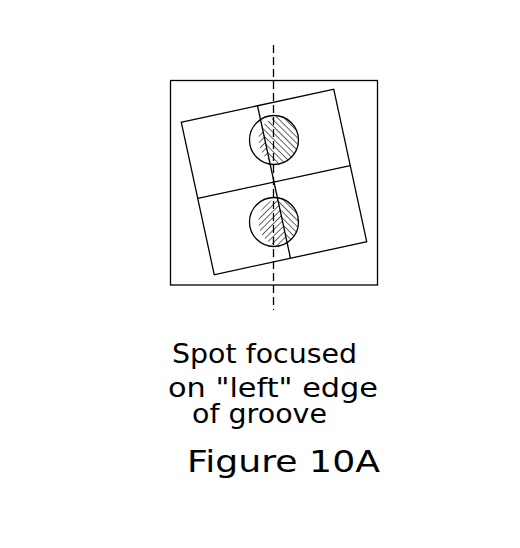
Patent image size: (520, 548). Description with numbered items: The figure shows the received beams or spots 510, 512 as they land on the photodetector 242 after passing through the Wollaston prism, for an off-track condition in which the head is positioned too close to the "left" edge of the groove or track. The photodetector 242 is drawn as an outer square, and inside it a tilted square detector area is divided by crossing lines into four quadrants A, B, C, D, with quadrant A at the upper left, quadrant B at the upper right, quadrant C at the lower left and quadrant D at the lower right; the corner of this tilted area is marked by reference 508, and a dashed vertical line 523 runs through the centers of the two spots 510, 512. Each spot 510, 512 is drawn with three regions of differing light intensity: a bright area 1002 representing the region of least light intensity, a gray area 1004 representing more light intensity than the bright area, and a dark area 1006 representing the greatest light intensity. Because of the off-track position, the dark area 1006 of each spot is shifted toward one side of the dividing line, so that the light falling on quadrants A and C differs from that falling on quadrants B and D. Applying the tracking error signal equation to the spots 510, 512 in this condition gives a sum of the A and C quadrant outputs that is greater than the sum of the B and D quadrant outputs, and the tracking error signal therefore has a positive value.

The photodetector 242 is at (170, 92).
The optical axis / groove edge line 523 is at (268, 70).
The detector element 508 is at (336, 90).
The spot 510 is at (286, 118).
The spot 512 is at (288, 201).
The bright area 1002 is at (250, 136).
The gray area 1004 is at (250, 205).
The dark area 1006 is at (299, 143).
The quadrant A is at (188, 155).
The quadrant B is at (342, 127).
The quadrant C is at (251, 237).
The quadrant D is at (363, 236).